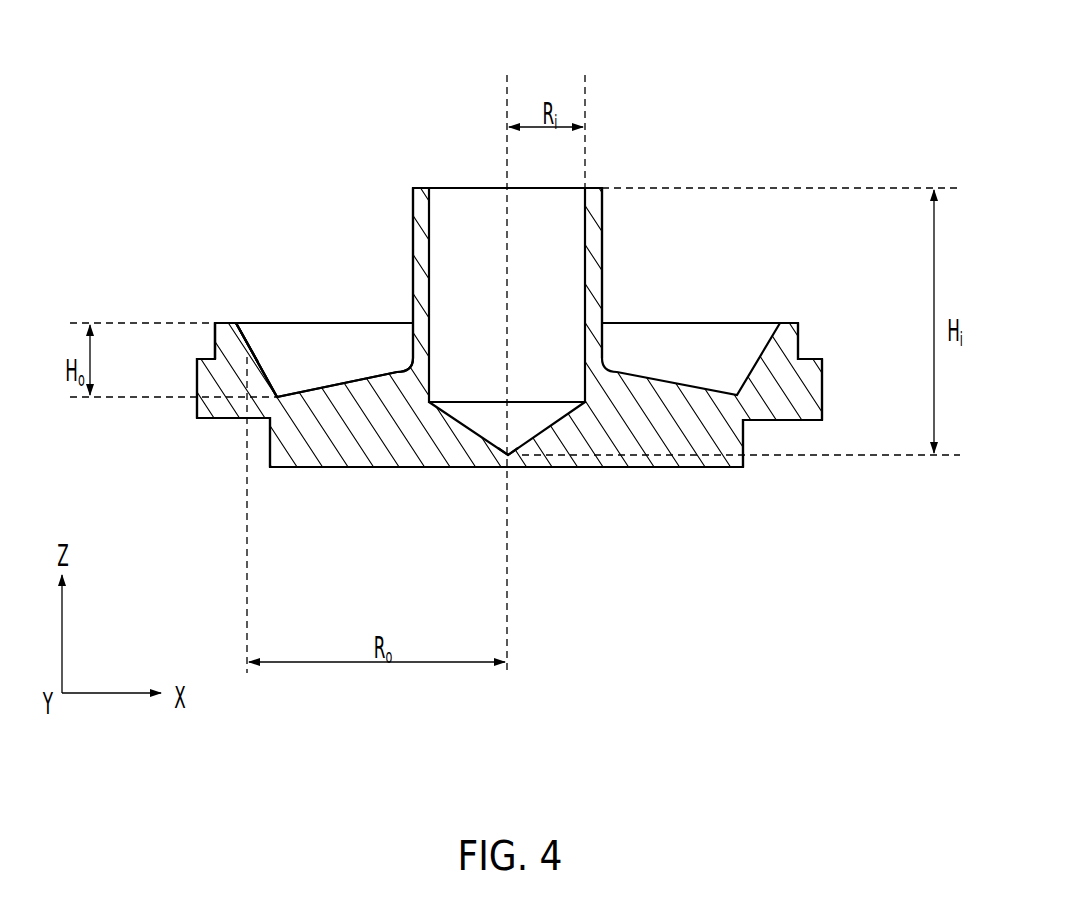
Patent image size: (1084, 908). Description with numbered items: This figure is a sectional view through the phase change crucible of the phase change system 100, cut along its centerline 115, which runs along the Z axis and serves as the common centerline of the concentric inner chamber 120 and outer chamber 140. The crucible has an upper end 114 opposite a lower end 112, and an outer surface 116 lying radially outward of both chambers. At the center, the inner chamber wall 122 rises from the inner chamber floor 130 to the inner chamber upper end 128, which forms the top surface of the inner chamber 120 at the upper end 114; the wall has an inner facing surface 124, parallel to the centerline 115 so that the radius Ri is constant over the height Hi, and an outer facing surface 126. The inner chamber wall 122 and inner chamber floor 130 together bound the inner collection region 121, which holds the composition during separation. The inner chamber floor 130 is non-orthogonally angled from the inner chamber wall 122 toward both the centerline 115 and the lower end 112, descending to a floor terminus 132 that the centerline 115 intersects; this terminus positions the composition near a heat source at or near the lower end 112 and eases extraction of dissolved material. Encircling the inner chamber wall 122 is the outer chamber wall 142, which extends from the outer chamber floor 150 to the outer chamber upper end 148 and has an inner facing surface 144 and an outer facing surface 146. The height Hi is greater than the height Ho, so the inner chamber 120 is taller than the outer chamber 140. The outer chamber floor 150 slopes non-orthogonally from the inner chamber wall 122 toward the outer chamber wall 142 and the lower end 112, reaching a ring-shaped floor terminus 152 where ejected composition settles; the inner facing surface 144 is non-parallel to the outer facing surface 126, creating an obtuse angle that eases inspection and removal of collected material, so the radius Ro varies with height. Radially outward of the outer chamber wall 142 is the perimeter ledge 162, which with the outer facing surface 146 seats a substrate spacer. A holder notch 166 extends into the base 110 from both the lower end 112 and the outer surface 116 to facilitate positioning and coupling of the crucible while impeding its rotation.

The phase change system 100 is at (535, 283).
The base 110 is at (509, 437).
The lower end 112 is at (506, 518).
The upper end 114 is at (609, 110).
The centerline 115 is at (474, 374).
The outer surface 116 is at (858, 389).
The inner chamber 120 is at (457, 253).
The inner collection region 121 is at (491, 160).
The inner chamber wall 122 is at (367, 273).
The inner facing surface 124 is at (507, 295).
The outer facing surface 126 is at (638, 273).
The inner chamber upper end 128 is at (546, 147).
The inner chamber floor 130 is at (507, 470).
The floor terminus 132 is at (494, 508).
The outer chamber 140 is at (246, 309).
The outer chamber wall 142 is at (185, 395).
The inner facing surface 144 is at (298, 339).
The outer facing surface 146 is at (177, 351).
The outer chamber upper end 148 is at (222, 304).
The outer chamber floor 150 is at (345, 458).
The floor terminus 152 is at (258, 446).
The perimeter ledge 162 is at (822, 321).
The holder notch 166 is at (782, 471).